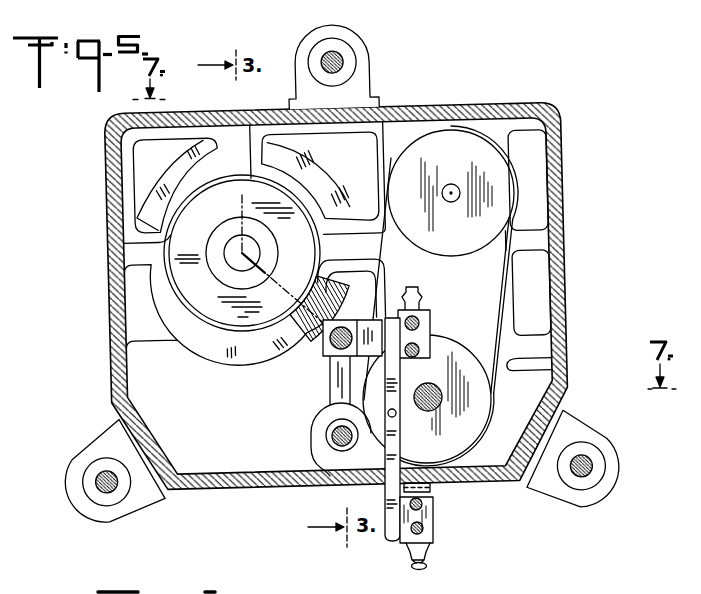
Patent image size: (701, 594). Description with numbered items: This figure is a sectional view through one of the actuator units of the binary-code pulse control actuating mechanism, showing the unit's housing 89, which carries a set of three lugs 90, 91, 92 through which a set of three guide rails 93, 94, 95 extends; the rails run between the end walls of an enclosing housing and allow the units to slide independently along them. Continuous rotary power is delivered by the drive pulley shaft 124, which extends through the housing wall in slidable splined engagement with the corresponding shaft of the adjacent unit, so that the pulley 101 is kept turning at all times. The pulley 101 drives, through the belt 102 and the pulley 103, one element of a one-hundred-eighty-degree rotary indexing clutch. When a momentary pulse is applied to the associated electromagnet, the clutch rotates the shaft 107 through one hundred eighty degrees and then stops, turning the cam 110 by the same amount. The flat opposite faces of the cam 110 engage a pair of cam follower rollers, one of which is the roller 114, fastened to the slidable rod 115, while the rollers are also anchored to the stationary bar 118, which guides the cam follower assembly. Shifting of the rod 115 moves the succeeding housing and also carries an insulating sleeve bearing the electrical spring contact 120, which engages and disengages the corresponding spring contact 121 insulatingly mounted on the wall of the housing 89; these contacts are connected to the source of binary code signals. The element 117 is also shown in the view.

The housing 89 is at (112, 208).
The lug 90 is at (312, 44).
The lug 91 is at (599, 447).
The lug 92 is at (62, 476).
The guide rail 93 is at (363, 62).
The guide rail 94 is at (586, 472).
The guide rail 95 is at (95, 491).
The pulley 101 is at (440, 342).
The belt 102 is at (497, 284).
The pulley 103 is at (447, 141).
The shaft 107 is at (240, 250).
The cam 110 is at (148, 178).
The cam follower roller 114 is at (310, 292).
The slidable rod 115 is at (334, 344).
The link 117 is at (329, 386).
The stationary bar 118 is at (339, 432).
The electrical spring contact 120 is at (398, 378).
The spring contact 121 is at (392, 538).
The drive pulley shaft 124 is at (442, 398).